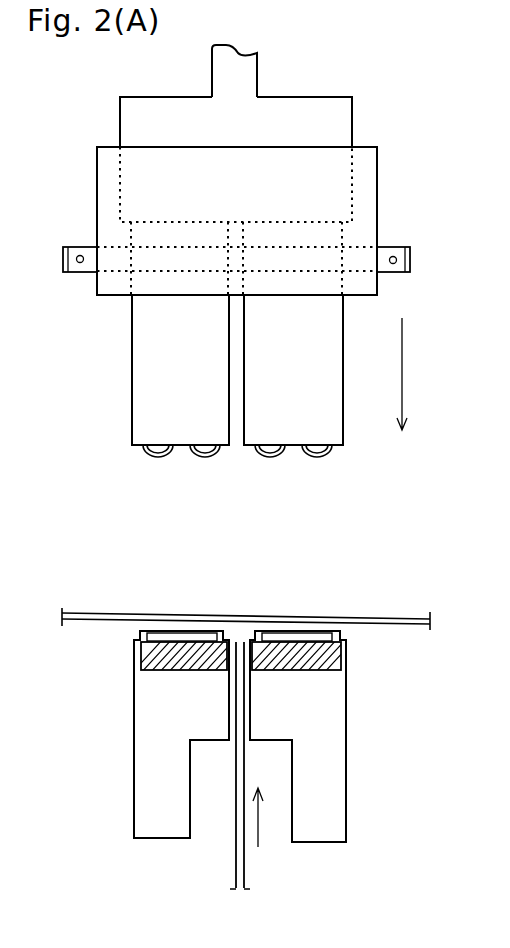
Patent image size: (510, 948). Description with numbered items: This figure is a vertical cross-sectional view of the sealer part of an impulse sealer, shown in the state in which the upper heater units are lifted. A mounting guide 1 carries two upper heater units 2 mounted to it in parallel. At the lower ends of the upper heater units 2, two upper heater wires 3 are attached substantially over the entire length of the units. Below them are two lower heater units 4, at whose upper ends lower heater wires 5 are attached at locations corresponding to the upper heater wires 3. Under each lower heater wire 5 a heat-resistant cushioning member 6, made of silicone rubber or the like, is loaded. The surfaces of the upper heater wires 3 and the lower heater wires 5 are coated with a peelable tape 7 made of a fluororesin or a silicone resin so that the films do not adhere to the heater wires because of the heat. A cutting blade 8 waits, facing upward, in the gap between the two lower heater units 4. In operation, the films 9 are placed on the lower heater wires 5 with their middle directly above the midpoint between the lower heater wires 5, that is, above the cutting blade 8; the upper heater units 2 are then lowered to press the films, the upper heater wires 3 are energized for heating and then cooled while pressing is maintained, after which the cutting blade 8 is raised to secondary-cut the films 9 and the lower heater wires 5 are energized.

The mounting guide 1 is at (380, 160).
The upper heater unit 2 is at (132, 356).
The upper heater wire 3 is at (203, 446).
The lower heater unit 4 is at (336, 727).
The lower heater wire 5 is at (303, 636).
The heat-resistant cushioning member 6 is at (347, 662).
The peelable tape 7 is at (345, 445).
The cutting blade 8 is at (246, 868).
The films 9 is at (412, 618).